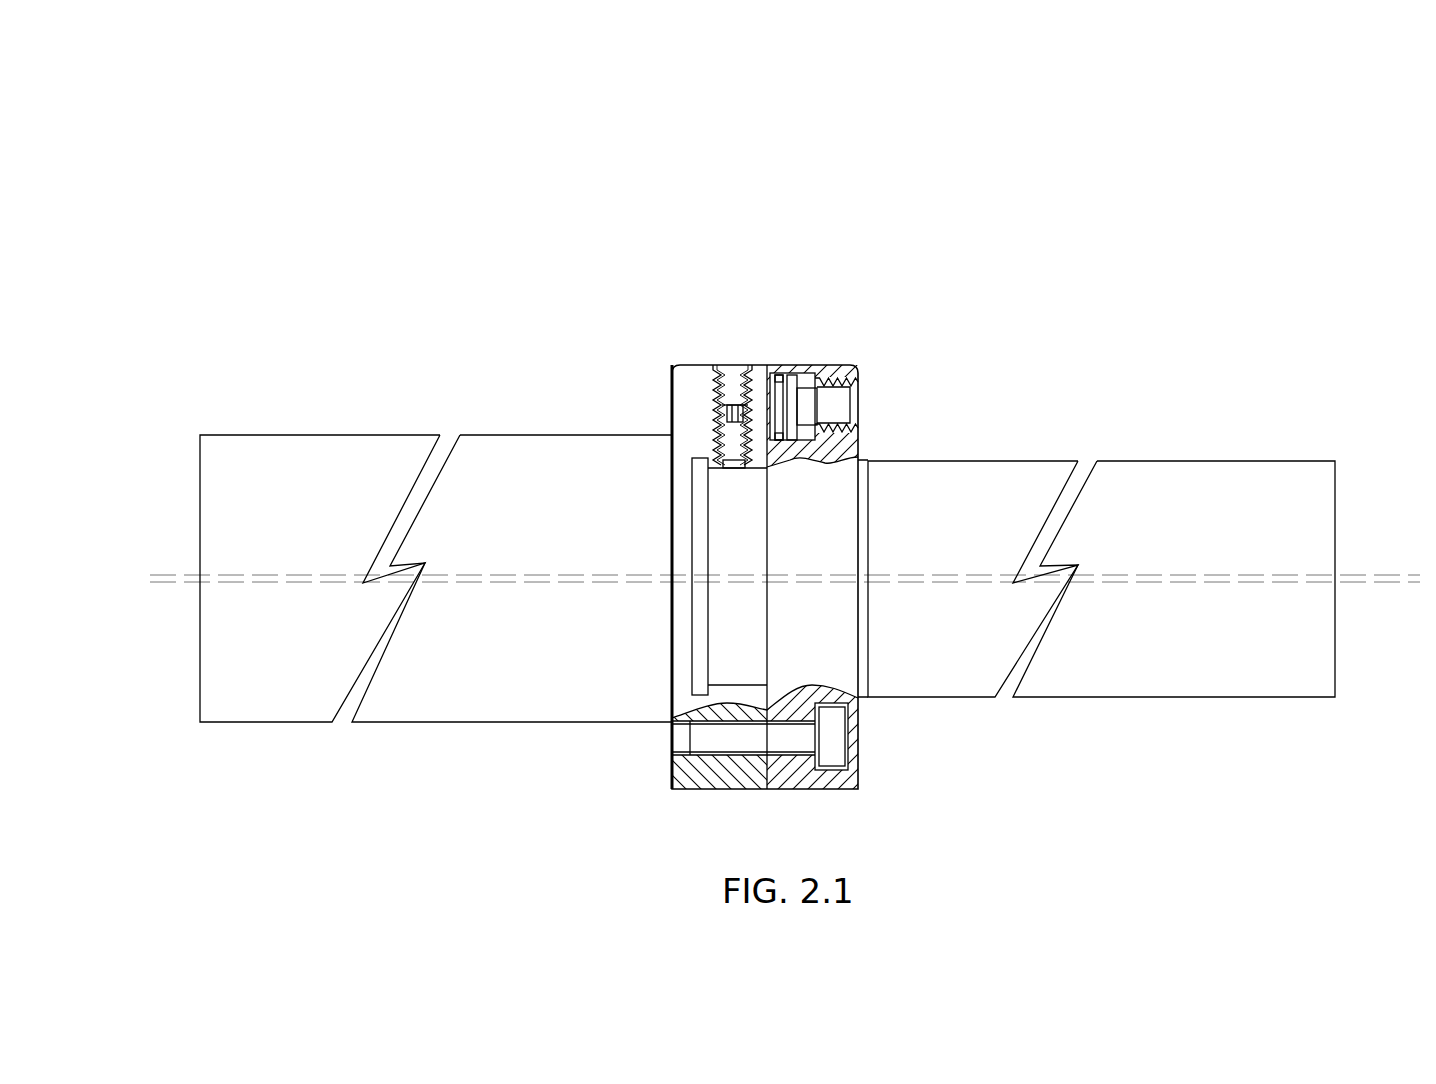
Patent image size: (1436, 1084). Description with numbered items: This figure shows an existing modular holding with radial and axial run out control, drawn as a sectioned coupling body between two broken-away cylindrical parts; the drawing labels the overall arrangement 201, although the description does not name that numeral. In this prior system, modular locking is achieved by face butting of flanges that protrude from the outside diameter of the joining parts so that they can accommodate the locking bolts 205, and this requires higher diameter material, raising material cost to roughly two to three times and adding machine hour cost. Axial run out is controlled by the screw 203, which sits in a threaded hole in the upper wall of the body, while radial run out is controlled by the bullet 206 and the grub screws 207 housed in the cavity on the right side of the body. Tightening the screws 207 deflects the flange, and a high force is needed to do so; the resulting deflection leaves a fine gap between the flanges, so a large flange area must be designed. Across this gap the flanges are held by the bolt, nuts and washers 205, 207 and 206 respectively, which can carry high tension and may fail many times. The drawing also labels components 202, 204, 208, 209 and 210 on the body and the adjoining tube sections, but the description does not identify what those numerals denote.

The fitting assembly / body 201 is at (495, 465).
The threaded port 202 is at (713, 372).
The screw 203 is at (737, 396).
The lower channel 204 is at (675, 757).
The locking bolt 205 is at (849, 739).
The bullet 206 is at (795, 381).
The grub screw 207 is at (822, 400).
The right tube section 208 is at (952, 518).
The right tube far section 209 is at (1208, 516).
The left tube 210 is at (310, 497).